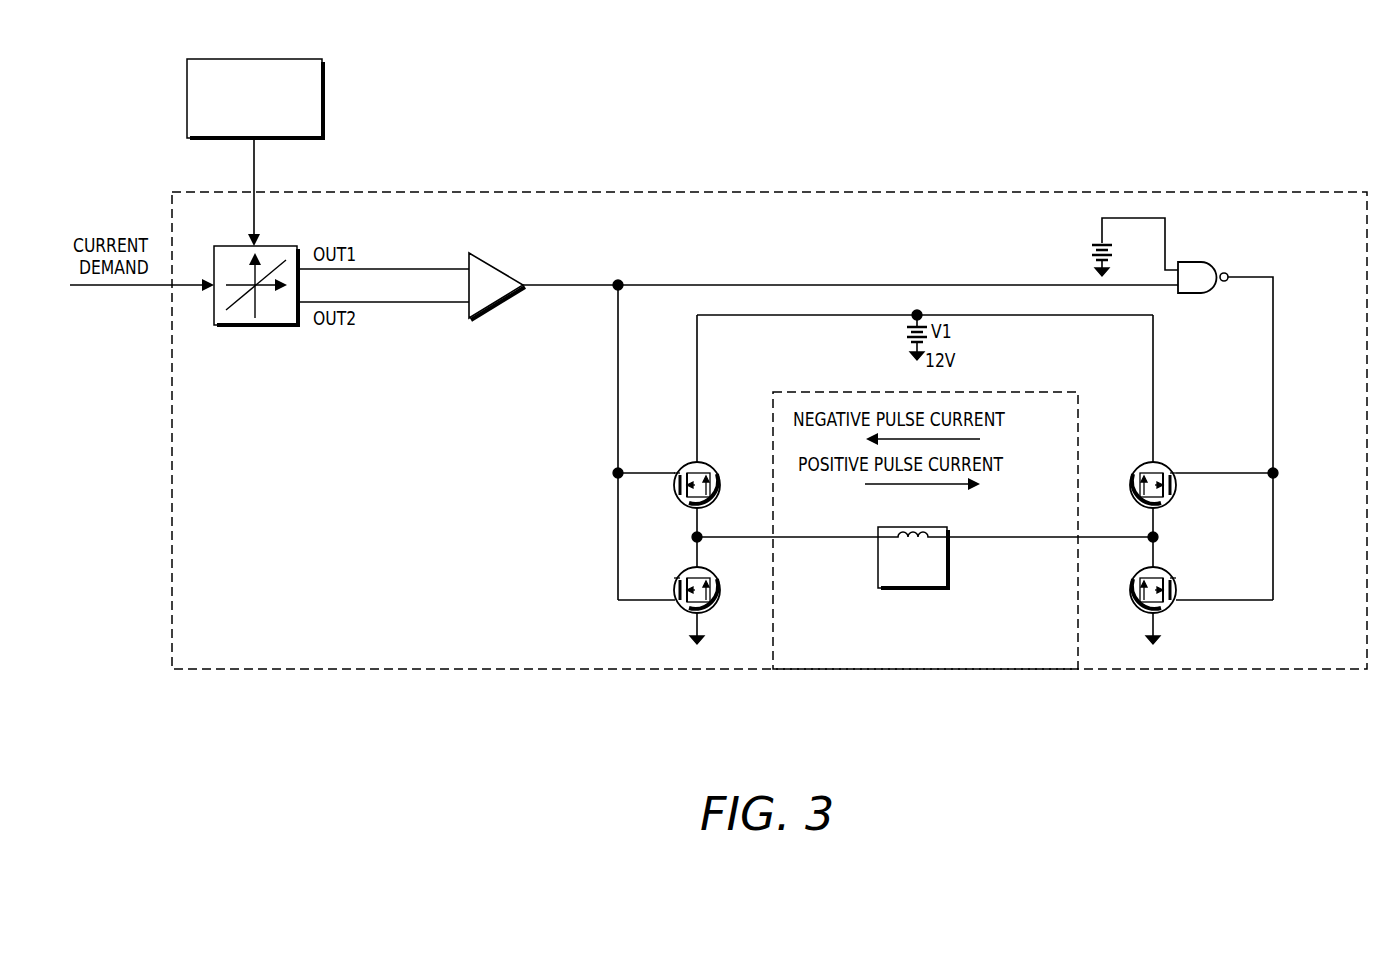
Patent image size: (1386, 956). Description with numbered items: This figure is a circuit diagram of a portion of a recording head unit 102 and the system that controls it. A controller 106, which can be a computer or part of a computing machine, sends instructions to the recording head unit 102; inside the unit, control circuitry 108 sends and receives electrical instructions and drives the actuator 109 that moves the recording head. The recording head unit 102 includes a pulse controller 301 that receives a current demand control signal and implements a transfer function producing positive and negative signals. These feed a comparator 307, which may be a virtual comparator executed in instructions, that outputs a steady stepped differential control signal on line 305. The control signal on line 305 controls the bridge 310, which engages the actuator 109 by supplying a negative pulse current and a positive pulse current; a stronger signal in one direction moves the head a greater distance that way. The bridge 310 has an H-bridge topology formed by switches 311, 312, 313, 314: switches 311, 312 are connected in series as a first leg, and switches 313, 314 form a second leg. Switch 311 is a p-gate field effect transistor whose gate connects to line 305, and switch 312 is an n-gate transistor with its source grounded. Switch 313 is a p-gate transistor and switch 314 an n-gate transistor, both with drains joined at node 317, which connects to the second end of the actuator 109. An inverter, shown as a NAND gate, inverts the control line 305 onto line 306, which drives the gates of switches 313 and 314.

The recording head unit 102 is at (713, 165).
The controller 106 is at (318, 59).
The control circuitry 108 is at (392, 670).
The actuator 109 is at (897, 527).
The pulse controller 301 is at (234, 246).
The line 305 is at (590, 283).
The line 306 is at (1275, 341).
The comparator 307 is at (487, 263).
The bridge 310 is at (692, 538).
The switch 311 is at (707, 468).
The switch 312 is at (707, 613).
The switch 313 is at (1165, 466).
The switch 314 is at (1165, 570).
The node 317 is at (978, 537).